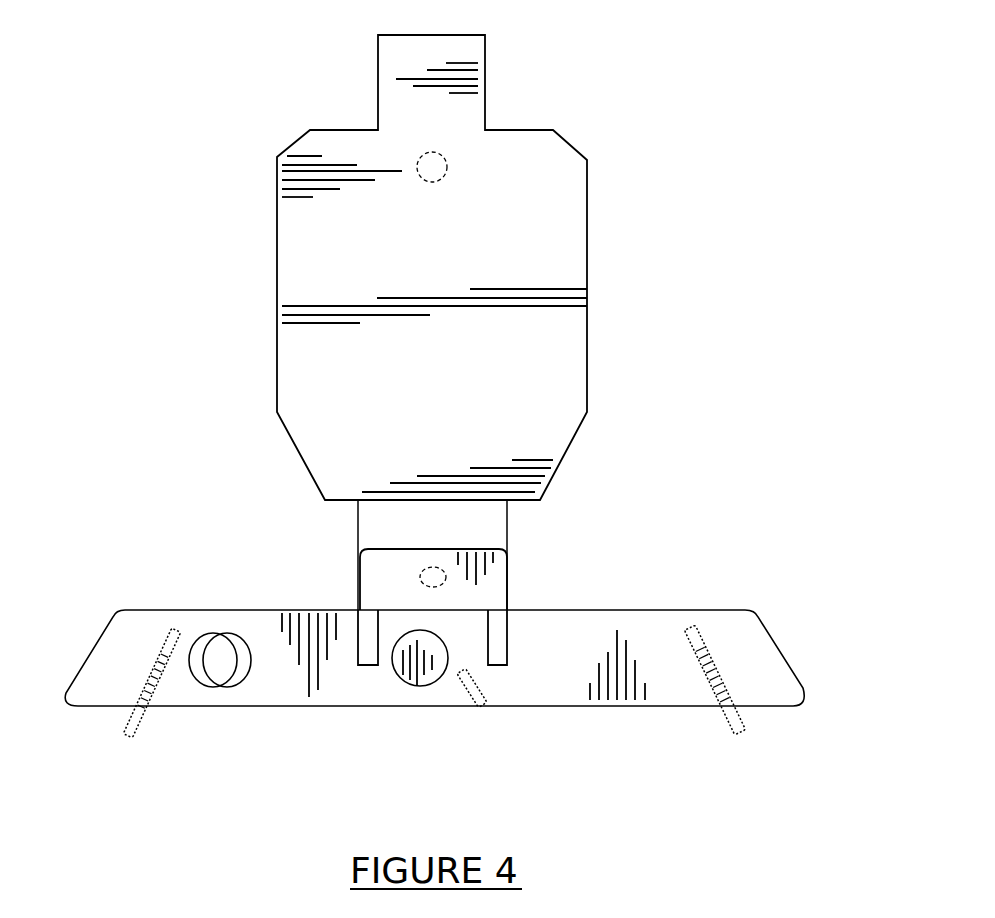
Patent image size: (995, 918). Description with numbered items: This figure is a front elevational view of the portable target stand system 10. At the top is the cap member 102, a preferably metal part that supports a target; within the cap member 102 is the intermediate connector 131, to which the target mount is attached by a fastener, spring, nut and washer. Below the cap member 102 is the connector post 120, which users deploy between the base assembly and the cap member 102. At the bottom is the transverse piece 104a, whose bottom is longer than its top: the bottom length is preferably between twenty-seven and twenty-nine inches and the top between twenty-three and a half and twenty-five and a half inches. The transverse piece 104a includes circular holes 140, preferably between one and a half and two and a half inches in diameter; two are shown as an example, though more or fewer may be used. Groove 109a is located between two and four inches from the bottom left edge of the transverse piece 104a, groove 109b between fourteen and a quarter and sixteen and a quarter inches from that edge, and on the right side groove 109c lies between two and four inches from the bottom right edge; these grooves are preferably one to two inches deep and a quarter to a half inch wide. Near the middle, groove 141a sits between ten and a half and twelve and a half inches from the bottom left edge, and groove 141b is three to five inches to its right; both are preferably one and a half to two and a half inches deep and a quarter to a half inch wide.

The portable target stand system 10 is at (879, 709).
The cap member 102 is at (267, 155).
The intermediate connector 131 is at (500, 293).
The connector post 120 is at (447, 533).
The groove 141a is at (370, 637).
The groove 141b is at (493, 637).
The transverse piece 104a is at (582, 668).
The circular holes 140 is at (230, 652).
The groove 109a is at (165, 650).
The groove 109b is at (472, 687).
The groove 109c is at (698, 640).